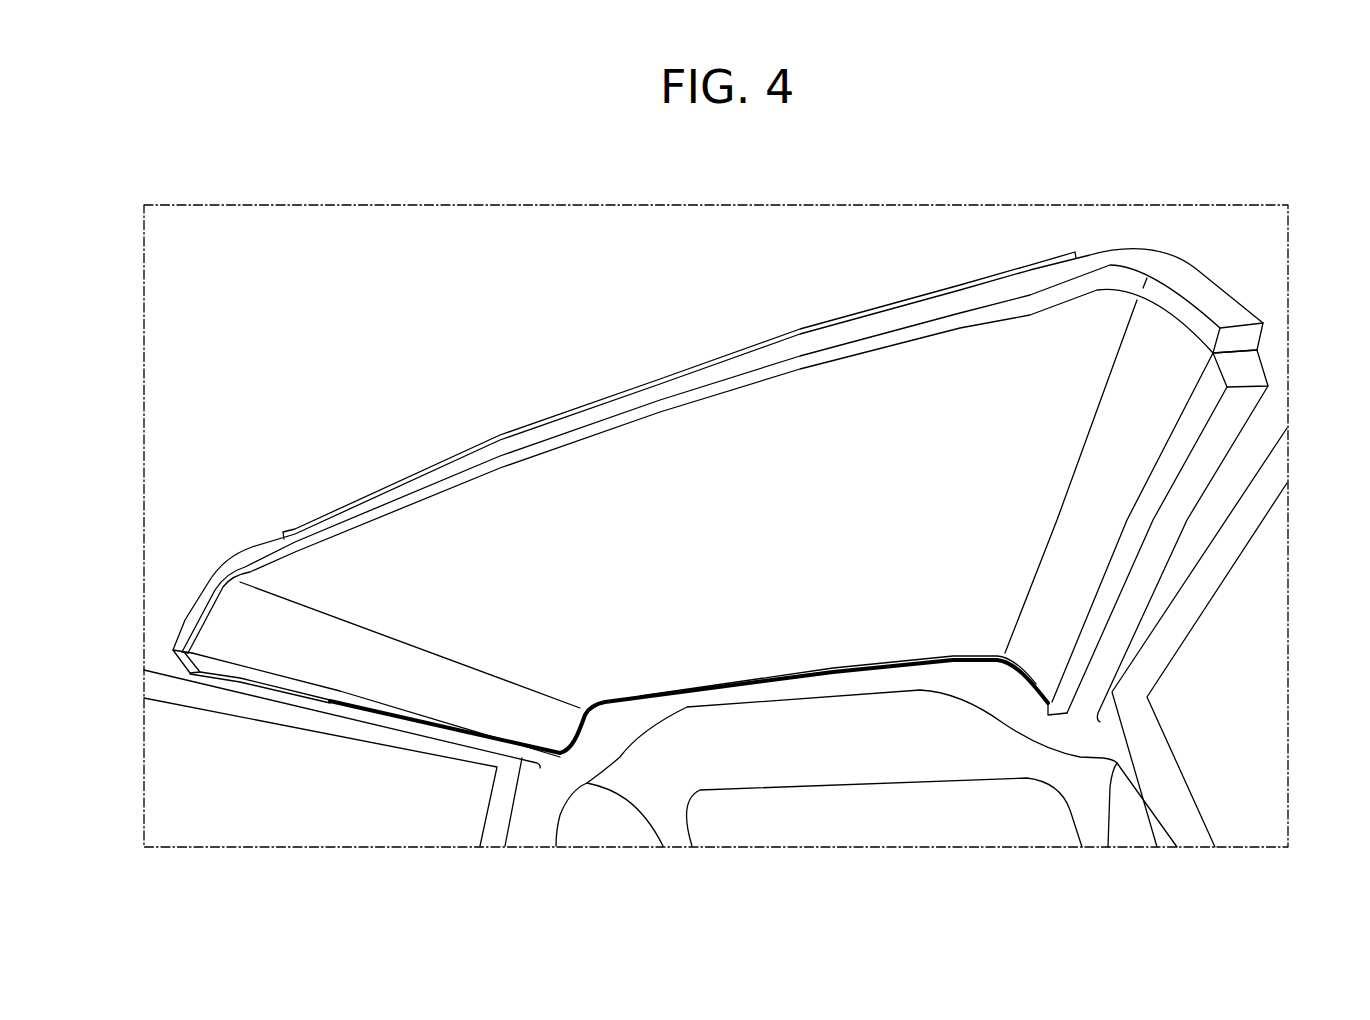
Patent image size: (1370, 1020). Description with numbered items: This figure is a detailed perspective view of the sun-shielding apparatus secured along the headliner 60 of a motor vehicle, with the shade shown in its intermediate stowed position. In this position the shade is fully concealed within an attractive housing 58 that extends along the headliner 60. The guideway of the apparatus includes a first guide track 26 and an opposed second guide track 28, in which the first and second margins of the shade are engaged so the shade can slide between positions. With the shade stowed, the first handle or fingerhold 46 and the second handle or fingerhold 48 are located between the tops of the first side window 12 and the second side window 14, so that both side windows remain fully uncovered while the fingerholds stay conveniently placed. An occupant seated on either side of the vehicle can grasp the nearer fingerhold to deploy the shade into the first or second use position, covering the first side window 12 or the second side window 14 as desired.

The first side window 12 is at (217, 757).
The second side window 14 is at (1218, 688).
The first guide track 26 is at (828, 676).
The second guide track 28 is at (680, 365).
The first handle or fingerhold 46 is at (313, 699).
The second handle or fingerhold 48 is at (1225, 428).
The housing 58 is at (467, 545).
The headliner 60 is at (872, 293).